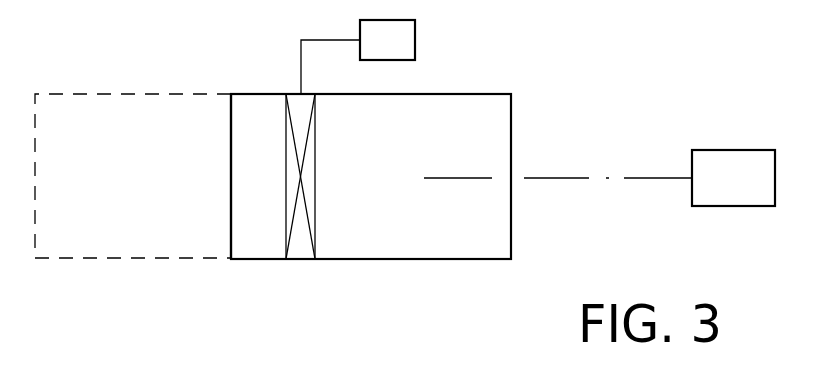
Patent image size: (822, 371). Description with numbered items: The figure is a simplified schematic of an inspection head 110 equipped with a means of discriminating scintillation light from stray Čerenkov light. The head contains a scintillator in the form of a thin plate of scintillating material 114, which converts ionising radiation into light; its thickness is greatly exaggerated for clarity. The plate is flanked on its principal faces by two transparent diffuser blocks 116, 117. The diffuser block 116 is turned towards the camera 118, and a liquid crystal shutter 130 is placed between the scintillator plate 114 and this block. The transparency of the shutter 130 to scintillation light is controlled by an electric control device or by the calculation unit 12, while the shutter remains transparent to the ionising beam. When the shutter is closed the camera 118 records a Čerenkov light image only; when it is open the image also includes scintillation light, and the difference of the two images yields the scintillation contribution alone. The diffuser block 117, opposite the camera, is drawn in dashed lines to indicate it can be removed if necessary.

The inspection head 110 is at (224, 278).
The thin plate of scintillating material 114 is at (258, 105).
The transparent diffuser block 116 is at (438, 256).
The shutter 130 is at (305, 252).
The transparent diffuser block 117 is at (96, 94).
The calculation unit 12 is at (415, 40).
The camera 118 is at (728, 158).